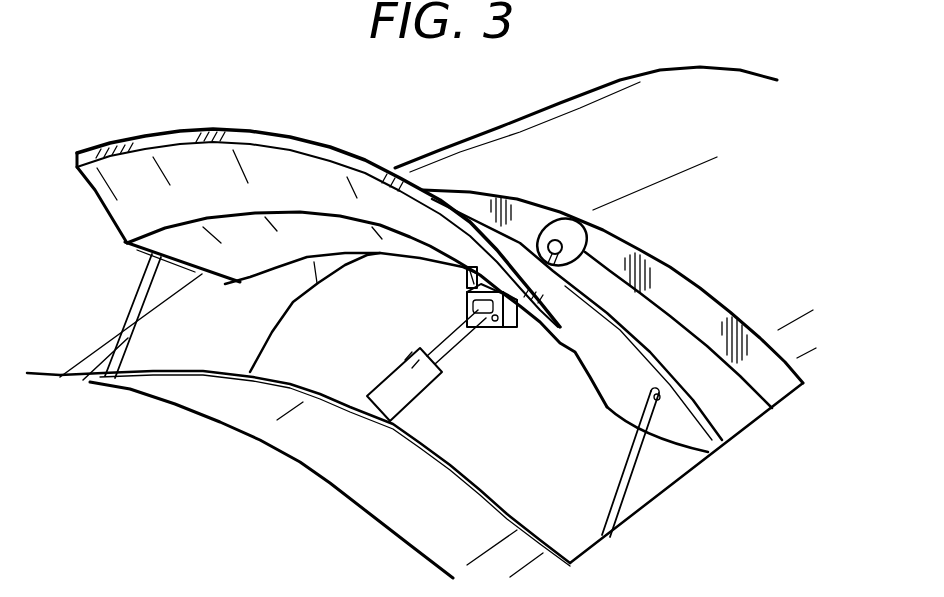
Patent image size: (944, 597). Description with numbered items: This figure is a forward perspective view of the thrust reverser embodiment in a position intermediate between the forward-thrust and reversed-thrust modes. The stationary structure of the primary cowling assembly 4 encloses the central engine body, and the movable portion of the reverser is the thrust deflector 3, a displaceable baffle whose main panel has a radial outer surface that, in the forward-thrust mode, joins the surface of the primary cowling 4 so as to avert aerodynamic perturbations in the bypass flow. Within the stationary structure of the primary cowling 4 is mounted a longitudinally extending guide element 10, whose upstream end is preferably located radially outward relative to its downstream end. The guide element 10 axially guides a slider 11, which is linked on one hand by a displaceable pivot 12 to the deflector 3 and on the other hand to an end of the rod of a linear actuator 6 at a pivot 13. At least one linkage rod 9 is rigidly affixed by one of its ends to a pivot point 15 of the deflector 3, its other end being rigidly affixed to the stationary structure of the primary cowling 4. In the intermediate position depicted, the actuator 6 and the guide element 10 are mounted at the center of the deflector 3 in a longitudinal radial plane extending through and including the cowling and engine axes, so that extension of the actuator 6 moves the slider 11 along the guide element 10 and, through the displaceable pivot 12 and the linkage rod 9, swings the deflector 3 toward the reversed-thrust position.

The thrust deflector 3 is at (612, 332).
The primary cowling assembly 4 is at (387, 477).
The linear actuator 6 is at (377, 402).
The linkage rod 9 is at (128, 323).
The guide element 10 is at (566, 247).
The slider 11 is at (523, 313).
The displaceable pivot 12 is at (462, 277).
The pivot 13 is at (497, 321).
The pivot point 15 is at (722, 440).